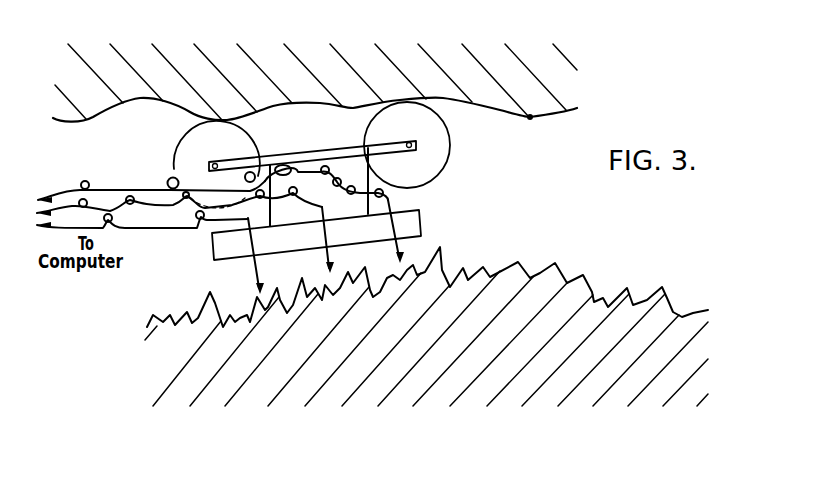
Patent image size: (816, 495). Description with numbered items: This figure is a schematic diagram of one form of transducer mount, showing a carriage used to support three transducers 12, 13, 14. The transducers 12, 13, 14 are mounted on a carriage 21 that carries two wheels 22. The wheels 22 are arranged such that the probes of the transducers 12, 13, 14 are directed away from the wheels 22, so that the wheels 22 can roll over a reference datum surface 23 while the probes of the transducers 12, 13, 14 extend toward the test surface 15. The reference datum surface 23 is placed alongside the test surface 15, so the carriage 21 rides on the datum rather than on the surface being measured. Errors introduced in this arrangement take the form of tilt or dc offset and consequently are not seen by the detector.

The transducer 12 is at (258, 266).
The transducer 13 is at (328, 266).
The transducer 14 is at (405, 253).
The test surface 15 is at (592, 290).
The carriage 21 is at (297, 153).
The wheels 22 is at (433, 144).
The reference datum surface 23 is at (530, 117).